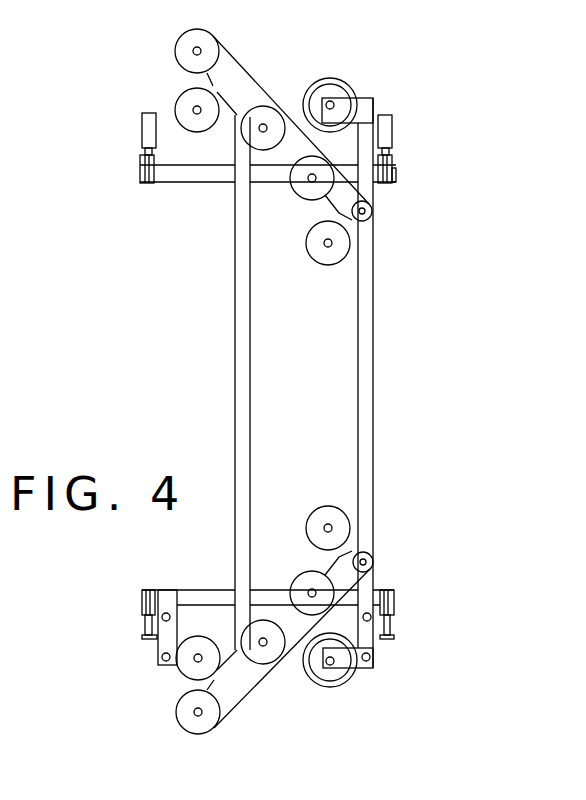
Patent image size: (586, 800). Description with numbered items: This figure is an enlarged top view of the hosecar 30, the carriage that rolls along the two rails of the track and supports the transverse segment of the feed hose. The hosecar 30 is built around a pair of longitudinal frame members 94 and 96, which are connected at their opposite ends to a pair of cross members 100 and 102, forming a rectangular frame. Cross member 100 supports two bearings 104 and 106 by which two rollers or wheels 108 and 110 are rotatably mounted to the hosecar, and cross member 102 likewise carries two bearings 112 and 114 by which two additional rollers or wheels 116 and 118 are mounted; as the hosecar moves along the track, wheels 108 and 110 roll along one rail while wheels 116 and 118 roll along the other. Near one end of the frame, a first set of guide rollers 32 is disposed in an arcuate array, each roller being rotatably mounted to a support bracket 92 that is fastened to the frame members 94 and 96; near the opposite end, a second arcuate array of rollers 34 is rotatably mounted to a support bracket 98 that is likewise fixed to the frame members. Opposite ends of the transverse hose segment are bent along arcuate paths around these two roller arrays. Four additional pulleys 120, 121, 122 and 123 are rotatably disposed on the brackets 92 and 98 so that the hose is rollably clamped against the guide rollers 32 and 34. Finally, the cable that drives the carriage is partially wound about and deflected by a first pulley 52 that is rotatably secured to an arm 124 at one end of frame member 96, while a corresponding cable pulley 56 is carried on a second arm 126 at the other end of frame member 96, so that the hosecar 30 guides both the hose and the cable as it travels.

The hosecar 30 is at (137, 339).
The guide rollers 32 is at (258, 145).
The guide rollers 34 is at (297, 577).
The first pulley 52 is at (333, 85).
The cable pulleys 56 is at (345, 678).
The support bracket 92 is at (245, 93).
The longitudinal frame member 94 is at (243, 322).
The longitudinal frame member 96 is at (367, 318).
The support bracket 98 is at (250, 692).
The cross member 100 is at (201, 184).
The cross member 102 is at (203, 597).
The bearing 104 is at (140, 168).
The bearing 106 is at (394, 175).
The wheel 108 is at (142, 128).
The wheel 110 is at (383, 133).
The lower left actuator 112 is at (148, 600).
The bearing 114 is at (385, 597).
The wheel 116 is at (143, 637).
The wheel 118 is at (395, 638).
The pulley 120 is at (180, 47).
The pulley 121 is at (372, 213).
The pulley 122 is at (368, 555).
The pulley 123 is at (205, 727).
The arm 124 is at (372, 108).
The arm 126 is at (373, 668).